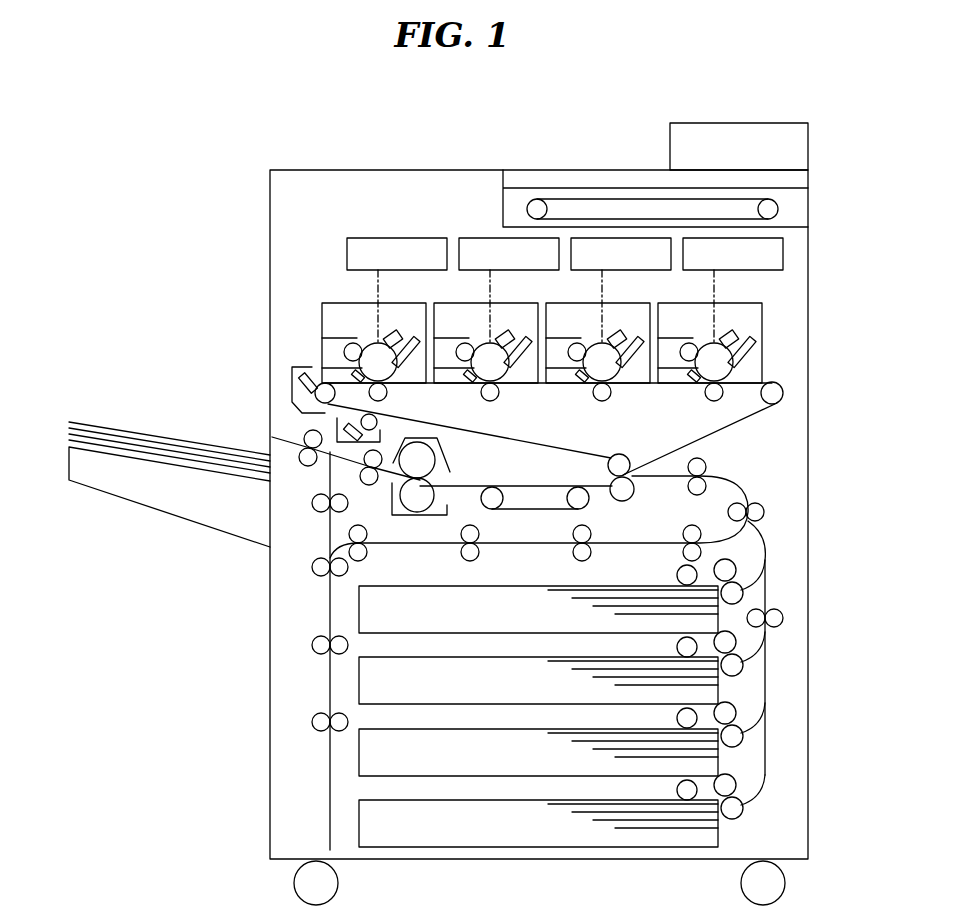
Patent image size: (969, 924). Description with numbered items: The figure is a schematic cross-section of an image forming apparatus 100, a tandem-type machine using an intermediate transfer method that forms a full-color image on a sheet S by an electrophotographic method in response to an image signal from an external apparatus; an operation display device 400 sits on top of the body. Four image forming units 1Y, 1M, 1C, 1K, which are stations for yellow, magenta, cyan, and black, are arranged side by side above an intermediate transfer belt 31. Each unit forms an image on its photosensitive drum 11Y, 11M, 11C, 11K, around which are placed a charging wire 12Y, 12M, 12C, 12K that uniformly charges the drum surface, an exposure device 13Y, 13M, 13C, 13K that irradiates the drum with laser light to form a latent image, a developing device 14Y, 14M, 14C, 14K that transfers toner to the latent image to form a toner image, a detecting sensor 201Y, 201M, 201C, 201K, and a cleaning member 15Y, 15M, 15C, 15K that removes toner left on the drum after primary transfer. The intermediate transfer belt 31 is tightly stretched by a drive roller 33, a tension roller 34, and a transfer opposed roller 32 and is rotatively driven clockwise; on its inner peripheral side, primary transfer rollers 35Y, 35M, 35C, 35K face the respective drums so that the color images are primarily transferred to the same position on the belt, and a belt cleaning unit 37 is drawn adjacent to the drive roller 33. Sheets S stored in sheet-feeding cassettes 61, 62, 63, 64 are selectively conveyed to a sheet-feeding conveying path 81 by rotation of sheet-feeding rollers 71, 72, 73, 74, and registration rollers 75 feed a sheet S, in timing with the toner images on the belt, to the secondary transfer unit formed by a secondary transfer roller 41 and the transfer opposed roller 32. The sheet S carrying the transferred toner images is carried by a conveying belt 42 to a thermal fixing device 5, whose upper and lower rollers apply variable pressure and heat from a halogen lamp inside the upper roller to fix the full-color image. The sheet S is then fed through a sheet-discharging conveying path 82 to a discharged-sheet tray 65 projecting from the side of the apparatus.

The image forming apparatus 100 is at (808, 640).
The operation display device 400 is at (808, 147).
The discharged-sheet tray 65 is at (170, 514).
The sheet S is at (145, 436).
The intermediate transfer belt 31 is at (668, 455).
The transfer opposed roller 32 is at (607, 467).
The drive roller 33 is at (315, 393).
The tension roller 34 is at (784, 394).
The belt cleaning device 37 is at (336, 432).
The secondary transfer roller 41 is at (633, 496).
The conveying belt 42 is at (540, 510).
The thermal fixing device 5 is at (448, 458).
The registration rollers 75 is at (707, 467).
The sheet-feeding conveying path 81 is at (758, 522).
The sheet-discharging conveying path 82 is at (322, 464).
The sheet-feeding cassette 61 is at (450, 586).
The sheet-feeding cassette 62 is at (468, 657).
The sheet-feeding cassette 63 is at (468, 729).
The sheet-feeding cassette 64 is at (468, 800).
The sheet-feeding roller 71 is at (677, 575).
The sheet-feeding roller 72 is at (677, 647).
The sheet-feeding roller 73 is at (677, 718).
The sheet-feeding roller 74 is at (677, 790).
The image forming unit 1Y is at (322, 303).
The image forming unit 1M is at (437, 303).
The image forming unit 1C is at (588, 303).
The image forming unit 1K is at (705, 303).
The photosensitive drum 11Y is at (376, 343).
The photosensitive drum 11M is at (489, 343).
The photosensitive drum 11C is at (602, 343).
The photosensitive drum 11K is at (733, 355).
The charging wire 12Y is at (403, 331).
The charging wire 12M is at (508, 333).
The charging wire 12C is at (622, 333).
The charging wire 12K is at (735, 333).
The exposure device 13Y is at (397, 290).
The exposure device 13M is at (509, 290).
The exposure device 13C is at (621, 290).
The exposure device 13K is at (733, 290).
The developing device 14Y is at (351, 343).
The developing device 14M is at (463, 343).
The developing device 14C is at (575, 343).
The developing device 14K is at (687, 343).
The cleaning member 15Y is at (387, 395).
The cleaning member 15M is at (499, 395).
The cleaning member 15C is at (611, 395).
The cleaning member 15K is at (723, 392).
The detecting sensor 201Y is at (356, 374).
The detecting sensor 201M is at (468, 379).
The detecting sensor 201C is at (582, 379).
The detecting sensor 201K is at (694, 379).
The primary transfer roller 35Y is at (335, 372).
The primary transfer roller 35M is at (505, 402).
The primary transfer roller 35C is at (613, 402).
The primary transfer roller 35K is at (745, 402).